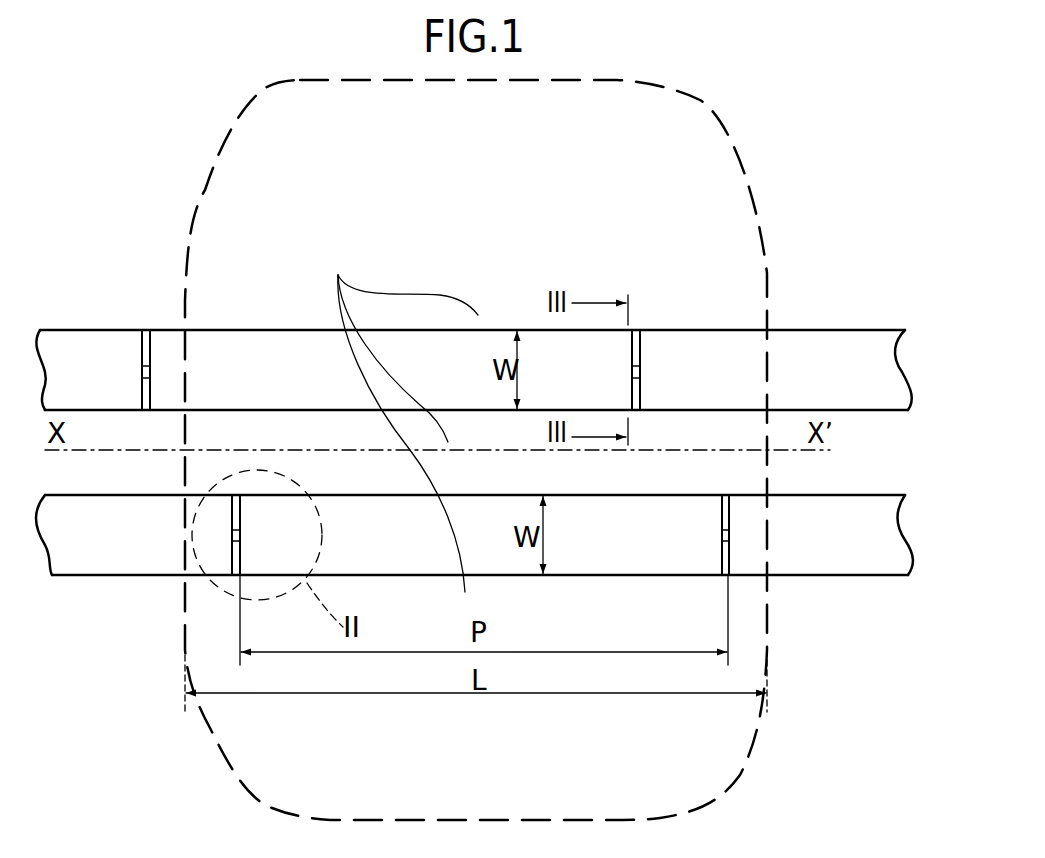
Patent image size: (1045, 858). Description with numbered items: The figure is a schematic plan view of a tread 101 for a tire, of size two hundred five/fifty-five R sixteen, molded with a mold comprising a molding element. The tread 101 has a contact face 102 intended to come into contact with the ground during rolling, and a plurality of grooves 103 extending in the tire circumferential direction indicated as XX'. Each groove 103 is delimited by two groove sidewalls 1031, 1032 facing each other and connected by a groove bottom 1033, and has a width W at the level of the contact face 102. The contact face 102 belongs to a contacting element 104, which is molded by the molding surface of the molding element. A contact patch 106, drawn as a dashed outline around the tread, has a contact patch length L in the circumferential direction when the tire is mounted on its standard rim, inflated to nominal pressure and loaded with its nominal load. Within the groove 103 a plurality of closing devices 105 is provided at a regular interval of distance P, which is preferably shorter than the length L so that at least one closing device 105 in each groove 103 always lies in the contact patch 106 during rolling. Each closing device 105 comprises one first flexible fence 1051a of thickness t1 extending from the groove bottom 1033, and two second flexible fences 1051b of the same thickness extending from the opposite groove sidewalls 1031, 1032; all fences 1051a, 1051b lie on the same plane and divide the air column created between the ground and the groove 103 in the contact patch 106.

The tread 101 is at (722, 202).
The contact face 102 is at (277, 308).
The groove 103 is at (491, 450).
The groove sidewall 1031 is at (791, 331).
The groove sidewall 1032 is at (318, 407).
The groove bottom 1033 is at (459, 373).
The contacting element 104 is at (400, 419).
The closing device 105 is at (468, 461).
The first flexible fence 1051a is at (150, 372).
The second flexible fence 1051b is at (141, 345).
The contact patch 106 is at (200, 176).